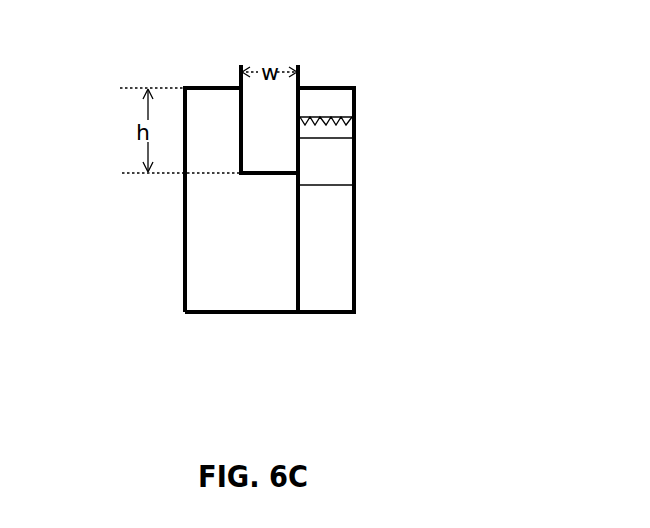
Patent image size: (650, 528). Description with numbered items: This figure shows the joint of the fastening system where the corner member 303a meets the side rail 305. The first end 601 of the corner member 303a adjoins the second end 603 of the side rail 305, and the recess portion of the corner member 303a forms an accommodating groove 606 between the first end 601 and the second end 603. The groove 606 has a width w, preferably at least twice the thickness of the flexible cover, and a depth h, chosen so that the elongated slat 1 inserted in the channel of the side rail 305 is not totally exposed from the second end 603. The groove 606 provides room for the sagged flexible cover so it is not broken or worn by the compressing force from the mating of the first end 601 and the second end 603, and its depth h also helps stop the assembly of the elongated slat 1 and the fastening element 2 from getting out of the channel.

The corner member 303a is at (193, 110).
The accommodating groove 606 is at (273, 50).
The fastening element 2 is at (343, 132).
The elongated slat 1 is at (348, 158).
The side rail 305 is at (348, 228).
The first end of the corner member 601 is at (267, 309).
The second end of the side rail 603 is at (313, 298).